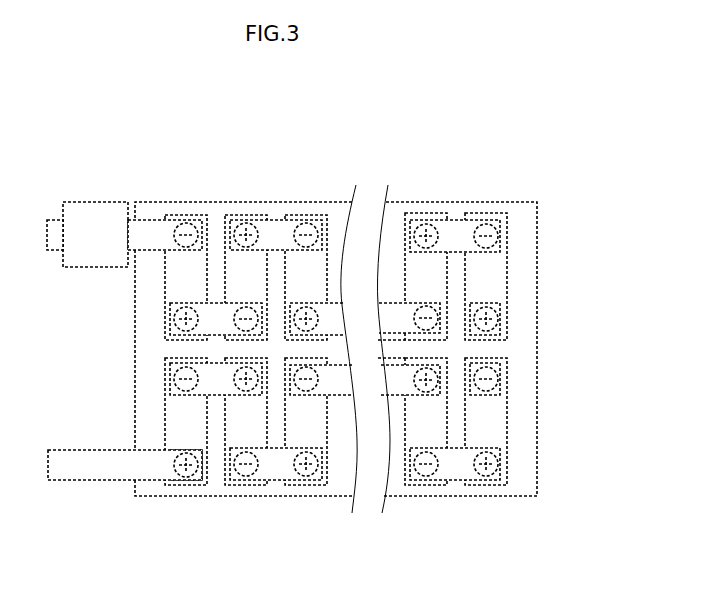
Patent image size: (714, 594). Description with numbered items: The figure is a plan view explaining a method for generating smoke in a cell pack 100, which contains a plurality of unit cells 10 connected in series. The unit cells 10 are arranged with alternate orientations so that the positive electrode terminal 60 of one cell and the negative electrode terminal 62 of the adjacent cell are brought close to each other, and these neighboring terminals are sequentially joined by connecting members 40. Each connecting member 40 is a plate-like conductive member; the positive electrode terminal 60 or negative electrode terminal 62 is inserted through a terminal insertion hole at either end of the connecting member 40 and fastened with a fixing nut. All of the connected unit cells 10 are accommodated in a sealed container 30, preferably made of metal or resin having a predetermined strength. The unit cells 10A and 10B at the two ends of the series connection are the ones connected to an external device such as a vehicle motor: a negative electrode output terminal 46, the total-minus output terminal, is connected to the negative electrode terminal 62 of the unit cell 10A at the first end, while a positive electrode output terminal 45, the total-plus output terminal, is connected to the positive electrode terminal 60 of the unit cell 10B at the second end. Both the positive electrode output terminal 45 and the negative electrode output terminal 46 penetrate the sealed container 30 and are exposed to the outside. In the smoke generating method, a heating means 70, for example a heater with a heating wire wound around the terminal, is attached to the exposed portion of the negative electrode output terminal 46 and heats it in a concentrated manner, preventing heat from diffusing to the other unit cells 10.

The unit cell 10 is at (240, 220).
The unit cell at a first end 10A is at (188, 218).
The unit cell at a second end 10B is at (193, 485).
The sealed container 30 is at (538, 268).
The connecting member 40 is at (280, 216).
The positive electrode output terminal 45 is at (60, 450).
The negative electrode output terminal 46 is at (55, 220).
The positive electrode terminal 60 is at (170, 327).
The negative electrode terminal 62 is at (180, 222).
The heating means 70 is at (78, 265).
The cell pack 100 is at (607, 113).